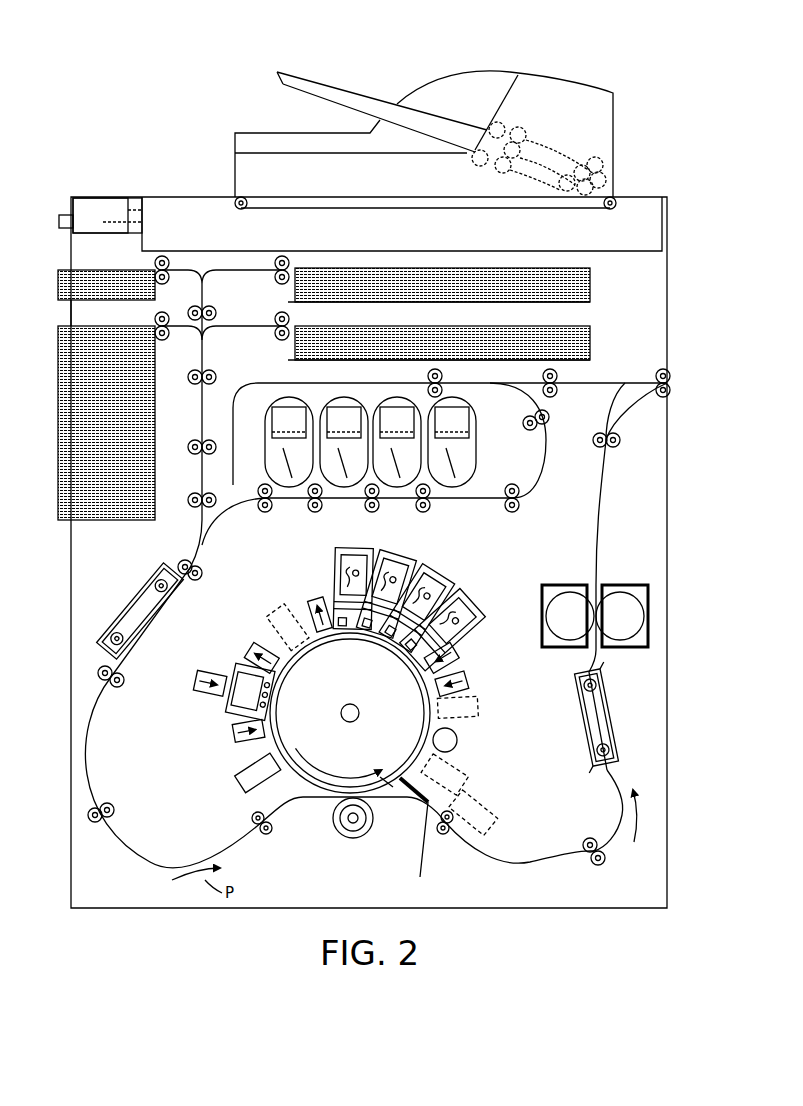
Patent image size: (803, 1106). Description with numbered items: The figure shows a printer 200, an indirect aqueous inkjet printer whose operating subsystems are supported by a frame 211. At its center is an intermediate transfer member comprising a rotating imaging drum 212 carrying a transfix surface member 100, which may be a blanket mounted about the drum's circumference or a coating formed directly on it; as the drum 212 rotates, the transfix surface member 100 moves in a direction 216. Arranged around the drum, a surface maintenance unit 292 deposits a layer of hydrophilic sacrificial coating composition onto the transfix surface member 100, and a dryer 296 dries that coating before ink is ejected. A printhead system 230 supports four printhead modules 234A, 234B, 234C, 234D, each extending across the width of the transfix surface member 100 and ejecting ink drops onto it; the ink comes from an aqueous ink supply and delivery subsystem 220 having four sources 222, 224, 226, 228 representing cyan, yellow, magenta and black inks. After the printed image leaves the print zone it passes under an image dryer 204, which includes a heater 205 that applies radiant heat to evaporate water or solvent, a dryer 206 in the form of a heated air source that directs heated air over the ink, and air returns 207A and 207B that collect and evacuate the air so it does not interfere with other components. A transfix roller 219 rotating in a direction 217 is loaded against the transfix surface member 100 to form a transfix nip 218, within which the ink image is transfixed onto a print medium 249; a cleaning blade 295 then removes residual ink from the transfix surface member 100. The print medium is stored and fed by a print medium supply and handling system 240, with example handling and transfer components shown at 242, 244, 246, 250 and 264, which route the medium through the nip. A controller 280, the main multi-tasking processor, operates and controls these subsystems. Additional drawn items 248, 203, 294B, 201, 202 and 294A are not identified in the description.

The printer 200 is at (119, 91).
The controller 280 is at (108, 200).
The handling and transfer component 246 is at (64, 302).
The print medium supply and handling system 240 is at (49, 443).
The media stack 248 is at (107, 522).
The handling and transfer component 242 is at (590, 288).
The handling and transfer component 244 is at (590, 346).
The aqueous ink supply and delivery subsystem 220 is at (311, 391).
The source of aqueous ink 222 is at (289, 442).
The source of aqueous ink 224 is at (344, 442).
The source of aqueous ink 226 is at (397, 442).
The source of aqueous ink 228 is at (452, 442).
The handling and transfer component 264 is at (118, 805).
The printhead system 230 is at (309, 556).
The printhead module 234A is at (370, 538).
The printhead module 234B is at (401, 572).
The printhead module 234C is at (444, 585).
The printhead module 234D is at (478, 607).
The charging unit 203 is at (318, 598).
The sensor 294B is at (274, 612).
The air return 207A is at (262, 648).
The image dryer 204 is at (215, 663).
The heater 205 is at (226, 708).
The dryer 206 is at (193, 685).
The air return 207B is at (235, 729).
The rotating imaging drum 212 is at (366, 683).
The direction 216 is at (316, 760).
The imaging station 201 is at (464, 639).
The charging unit 202 is at (455, 657).
The dryer 296 is at (470, 681).
The sensor 294A is at (482, 708).
The surface maintenance unit 292 is at (458, 741).
The handling and transfer component 250 is at (88, 752).
The frame 211 is at (71, 608).
The print medium 249 is at (303, 800).
The transfix nip 218 is at (321, 814).
The direction 217 is at (366, 840).
The transfix surface member 100 is at (393, 787).
The transfix roller 219 is at (388, 825).
The blade 295 is at (426, 805).